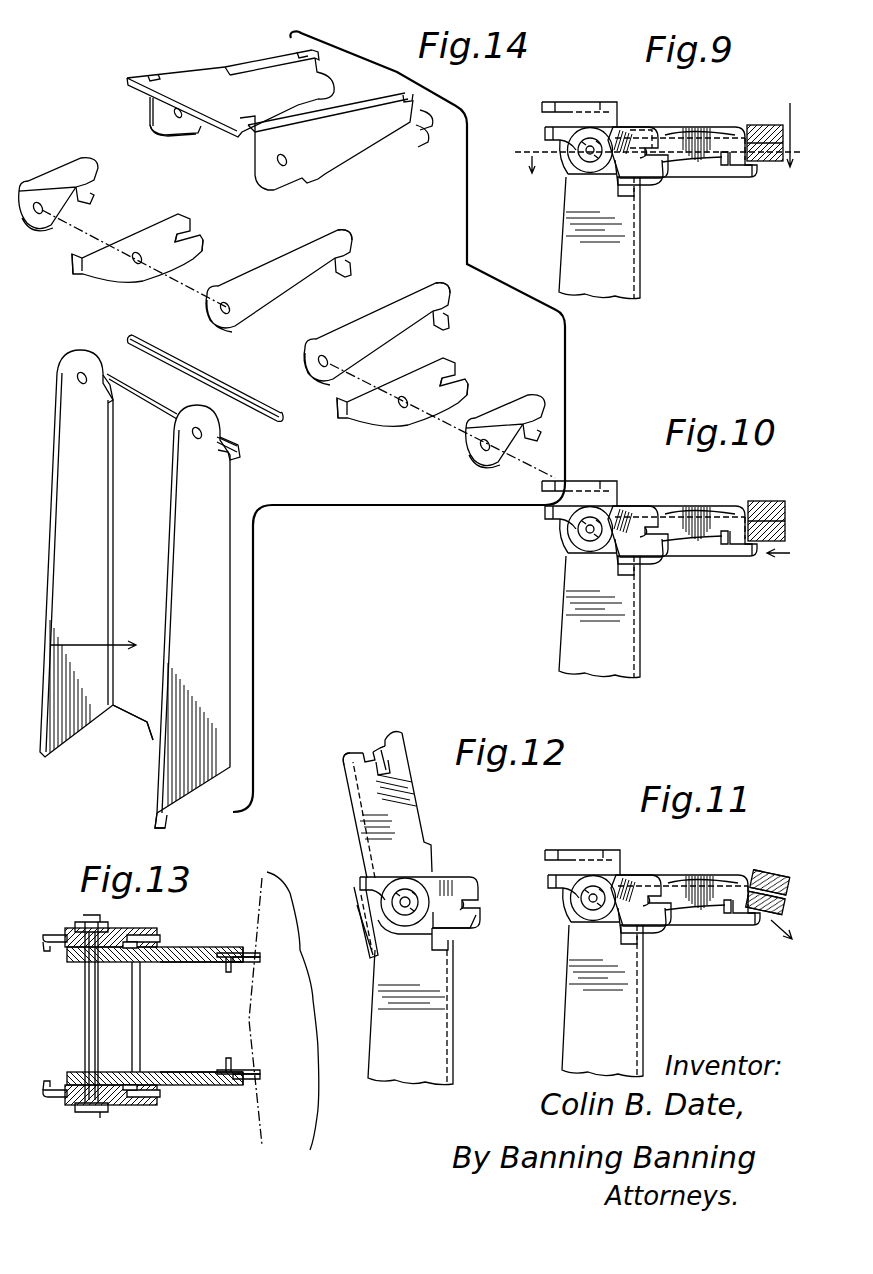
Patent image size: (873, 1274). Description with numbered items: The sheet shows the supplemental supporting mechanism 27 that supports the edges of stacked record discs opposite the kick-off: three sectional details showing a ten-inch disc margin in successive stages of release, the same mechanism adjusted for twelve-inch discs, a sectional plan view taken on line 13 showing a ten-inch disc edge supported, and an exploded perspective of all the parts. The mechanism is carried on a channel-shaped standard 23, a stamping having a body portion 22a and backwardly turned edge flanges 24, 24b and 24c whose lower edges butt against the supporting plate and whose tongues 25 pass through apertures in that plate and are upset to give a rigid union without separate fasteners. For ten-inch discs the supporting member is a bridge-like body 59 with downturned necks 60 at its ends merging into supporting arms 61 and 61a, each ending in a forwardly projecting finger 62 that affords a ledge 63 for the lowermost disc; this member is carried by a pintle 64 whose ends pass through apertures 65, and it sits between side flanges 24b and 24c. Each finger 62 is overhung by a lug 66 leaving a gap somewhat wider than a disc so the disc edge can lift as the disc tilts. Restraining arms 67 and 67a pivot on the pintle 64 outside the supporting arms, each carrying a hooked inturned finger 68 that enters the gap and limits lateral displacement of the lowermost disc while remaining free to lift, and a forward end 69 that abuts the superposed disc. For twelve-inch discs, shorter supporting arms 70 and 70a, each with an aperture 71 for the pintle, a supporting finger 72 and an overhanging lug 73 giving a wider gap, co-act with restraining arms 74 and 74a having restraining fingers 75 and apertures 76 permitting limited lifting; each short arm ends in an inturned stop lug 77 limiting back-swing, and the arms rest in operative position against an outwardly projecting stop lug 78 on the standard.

In FIG. 9, the section line 13— 13 is at (512, 153).
In FIG. 14, the body portion 22a is at (126, 524).
In FIG. 14, the channel-shaped standard 23 is at (78, 647).
In FIG. 9, the channel-shaped standard 23 is at (641, 267).
In FIG. 10, the channel-shaped standard 23 is at (658, 616).
In FIG. 11, the channel-shaped standard 23 is at (661, 1000).
In FIG. 12, the channel-shaped standard 23 is at (450, 1011).
In FIG. 13, the channel-shaped standard 23 is at (142, 1013).
In FIG. 9, the edge flange 24 is at (566, 234).
In FIG. 10, the edge flange 24 is at (585, 617).
In FIG. 11, the edge flange 24 is at (624, 1001).
In FIG. 12, the edge flange 24 is at (425, 1033).
In FIG. 14, the side flange 24b is at (56, 555).
In FIG. 14, the side flange 24c is at (215, 500).
In FIG. 14, the tongue 25 is at (145, 742).
In FIG. 9, the supplemental supporting mechanism 27 is at (653, 118).
In FIG. 10, the supplemental supporting mechanism 27 is at (643, 478).
In FIG. 11, the supplemental supporting mechanism 27 is at (646, 848).
In FIG. 12, the supplemental supporting mechanism 27 is at (454, 856).
In FIG. 13, the supplemental supporting mechanism 27 is at (153, 924).
In FIG. 14, the bridge-like body 59 is at (203, 87).
In FIG. 9, the bridge-like body 59 is at (572, 102).
In FIG. 10, the bridge-like body 59 is at (579, 475).
In FIG. 11, the bridge-like body 59 is at (582, 844).
In FIG. 12, the bridge-like body 59 is at (362, 930).
In FIG. 14, the downturned neck 60 is at (148, 105).
In FIG. 9, the downturned neck 60 is at (602, 104).
In FIG. 10, the downturned neck 60 is at (614, 465).
In FIG. 11, the downturned neck 60 is at (616, 840).
In FIG. 12, the downturned neck 60 is at (357, 910).
In FIG. 14, the supporting arm 61 is at (365, 145).
In FIG. 9, the supporting arm 61 is at (692, 172).
In FIG. 10, the supporting arm 61 is at (651, 546).
In FIG. 11, the supporting arm 61 is at (654, 914).
In FIG. 12, the supporting arm 61 is at (412, 784).
In FIG. 13, the supporting arm 61 is at (193, 1072).
In FIG. 14, the supporting arm 61a is at (252, 70).
In FIG. 13, the supporting arm 61a is at (185, 962).
In FIG. 14, the finger 62 is at (328, 88).
In FIG. 9, the finger 62 is at (757, 172).
In FIG. 10, the finger 62 is at (756, 558).
In FIG. 11, the finger 62 is at (744, 933).
In FIG. 12, the finger 62 is at (400, 733).
In FIG. 13, the finger 62 is at (260, 955).
In FIG. 14, the ledge 63 is at (302, 50).
In FIG. 12, the ledge 63 is at (380, 745).
In FIG. 13, the ledge 63 is at (260, 962).
In FIG. 14, the pintle 64 is at (208, 368).
In FIG. 9, the pintle 64 is at (578, 160).
In FIG. 10, the pintle 64 is at (575, 534).
In FIG. 11, the pintle 64 is at (576, 901).
In FIG. 12, the pintle 64 is at (404, 890).
In FIG. 13, the pintle 64 is at (84, 1013).
In FIG. 14, the aperture 65 is at (156, 132).
In FIG. 14, the lug 66 is at (300, 51).
In FIG. 12, the lug 66 is at (366, 752).
In FIG. 14, the restraining arm 67 is at (358, 315).
In FIG. 9, the restraining arm 67 is at (695, 132).
In FIG. 10, the restraining arm 67 is at (699, 500).
In FIG. 11, the restraining arm 67 is at (701, 875).
In FIG. 12, the restraining arm 67 is at (358, 816).
In FIG. 13, the restraining arm 67 is at (205, 1085).
In FIG. 14, the restraining arm 67a is at (285, 283).
In FIG. 13, the restraining arm 67a is at (210, 947).
In FIG. 14, the hooked inturned finger 68 is at (352, 272).
In FIG. 9, the hooked inturned finger 68 is at (727, 170).
In FIG. 10, the hooked inturned finger 68 is at (743, 565).
In FIG. 11, the hooked inturned finger 68 is at (715, 938).
In FIG. 12, the hooked inturned finger 68 is at (390, 768).
In FIG. 13, the hooked inturned finger 68 is at (228, 973).
In FIG. 14, the forward end 69 is at (352, 238).
In FIG. 10, the forward end 69 is at (766, 508).
In FIG. 12, the forward end 69 is at (346, 756).
In FIG. 13, the forward end 69 is at (248, 947).
In FIG. 14, the supporting arm 70 is at (422, 424).
In FIG. 9, the supporting arm 70 is at (610, 180).
In FIG. 10, the supporting arm 70 is at (575, 551).
In FIG. 11, the supporting arm 70 is at (591, 928).
In FIG. 12, the supporting arm 70 is at (420, 936).
In FIG. 13, the supporting arm 70 is at (46, 934).
In FIG. 14, the supporting arm 70a is at (150, 282).
In FIG. 14, the aperture 71 is at (136, 250).
In FIG. 14, the supporting finger 72 is at (202, 252).
In FIG. 9, the supporting finger 72 is at (652, 186).
In FIG. 10, the supporting finger 72 is at (657, 568).
In FIG. 11, the supporting finger 72 is at (654, 933).
In FIG. 12, the supporting finger 72 is at (470, 925).
In FIG. 13, the supporting finger 72 is at (158, 936).
In FIG. 14, the overhanging lug 73 is at (192, 226).
In FIG. 9, the overhanging lug 73 is at (657, 134).
In FIG. 14, the restraining arm 74 is at (518, 402).
In FIG. 9, the restraining arm 74 is at (630, 128).
In FIG. 10, the restraining arm 74 is at (629, 507).
In FIG. 11, the restraining arm 74 is at (643, 883).
In FIG. 12, the restraining arm 74 is at (460, 880).
In FIG. 13, the restraining arm 74 is at (118, 928).
In FIG. 14, the restraining arm 74a is at (62, 178).
In FIG. 14, the restraining finger 75 is at (95, 203).
In FIG. 9, the restraining finger 75 is at (660, 148).
In FIG. 10, the restraining finger 75 is at (666, 503).
In FIG. 11, the restraining finger 75 is at (668, 879).
In FIG. 12, the restraining finger 75 is at (468, 904).
In FIG. 13, the restraining finger 75 is at (140, 946).
In FIG. 14, the aperture 76 is at (37, 215).
In FIG. 14, the inturned stop lug 77 is at (75, 270).
In FIG. 9, the inturned stop lug 77 is at (545, 131).
In FIG. 10, the inturned stop lug 77 is at (537, 519).
In FIG. 11, the inturned stop lug 77 is at (549, 886).
In FIG. 12, the inturned stop lug 77 is at (360, 883).
In FIG. 13, the inturned stop lug 77 is at (46, 951).
In FIG. 14, the stop lug 78 is at (108, 372).
In FIG. 9, the stop lug 78 is at (640, 196).
In FIG. 10, the stop lug 78 is at (651, 584).
In FIG. 11, the stop lug 78 is at (653, 952).
In FIG. 12, the stop lug 78 is at (450, 944).